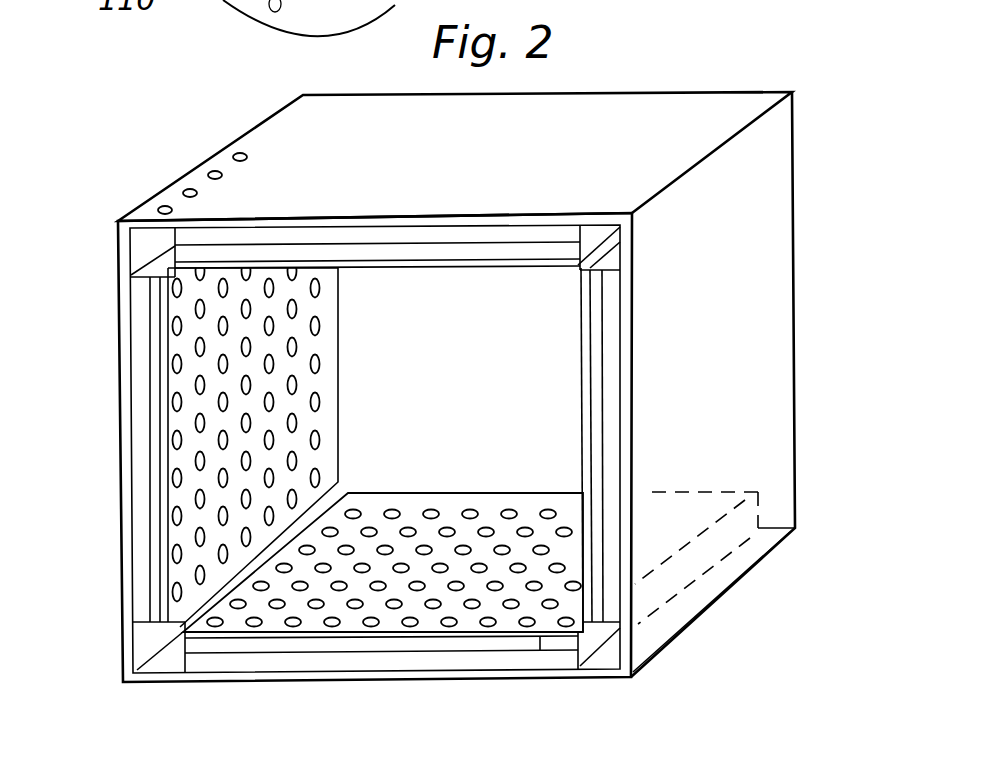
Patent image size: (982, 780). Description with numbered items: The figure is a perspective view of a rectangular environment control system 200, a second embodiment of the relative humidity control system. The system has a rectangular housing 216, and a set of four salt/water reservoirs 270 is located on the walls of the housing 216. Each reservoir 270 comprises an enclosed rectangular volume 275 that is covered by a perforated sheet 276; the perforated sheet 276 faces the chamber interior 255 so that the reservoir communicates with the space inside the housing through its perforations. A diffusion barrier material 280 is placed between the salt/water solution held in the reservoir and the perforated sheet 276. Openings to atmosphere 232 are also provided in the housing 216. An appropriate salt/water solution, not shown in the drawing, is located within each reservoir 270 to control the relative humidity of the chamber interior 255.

The rectangular environment control system 200 is at (812, 201).
The rectangular housing 216 is at (520, 170).
The openings to atmosphere 232 is at (214, 170).
The chamber interior 255 is at (490, 406).
The salt/water reservoir 270 is at (338, 660).
The enclosed rectangular volume 275 is at (450, 650).
The perforated sheet 276 is at (192, 335).
The diffusion barrier material 280 is at (543, 647).